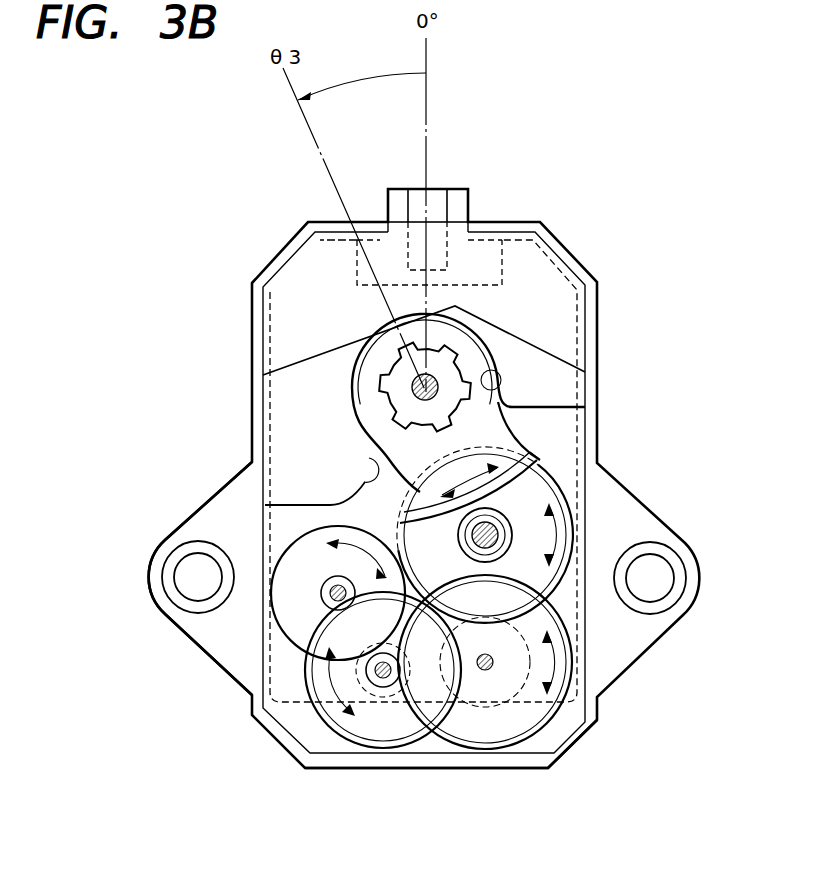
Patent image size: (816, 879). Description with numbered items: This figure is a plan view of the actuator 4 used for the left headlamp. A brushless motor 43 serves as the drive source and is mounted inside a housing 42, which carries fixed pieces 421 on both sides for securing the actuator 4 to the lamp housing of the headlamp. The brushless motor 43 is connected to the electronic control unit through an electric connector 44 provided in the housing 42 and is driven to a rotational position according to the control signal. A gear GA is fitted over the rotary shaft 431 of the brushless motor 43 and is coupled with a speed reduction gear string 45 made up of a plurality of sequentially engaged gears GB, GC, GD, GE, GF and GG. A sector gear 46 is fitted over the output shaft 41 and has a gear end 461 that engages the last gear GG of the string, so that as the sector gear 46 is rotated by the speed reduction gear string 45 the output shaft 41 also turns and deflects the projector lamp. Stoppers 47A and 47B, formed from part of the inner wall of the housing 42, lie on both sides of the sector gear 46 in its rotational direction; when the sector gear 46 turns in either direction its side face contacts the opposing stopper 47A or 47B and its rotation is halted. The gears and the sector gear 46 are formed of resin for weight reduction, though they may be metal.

The actuator 4 is at (580, 233).
The output shaft 41 is at (455, 345).
The housing 42 is at (592, 321).
The fixed pieces 421 is at (168, 572).
The brushless motor 43 is at (300, 548).
The rotary shaft 431 is at (325, 595).
The electric connector 44 is at (458, 205).
The speed reduction gear string 45 is at (594, 750).
The sector gear 46 is at (477, 427).
The gear end 461 is at (545, 462).
The stopper 47A is at (500, 388).
The stopper 47B is at (366, 457).
The gear GA is at (270, 600).
The gear GB is at (323, 723).
The gear GC is at (378, 693).
The gear GD is at (560, 703).
The gear GE is at (522, 735).
The gear GF is at (552, 525).
The gear GG is at (560, 583).